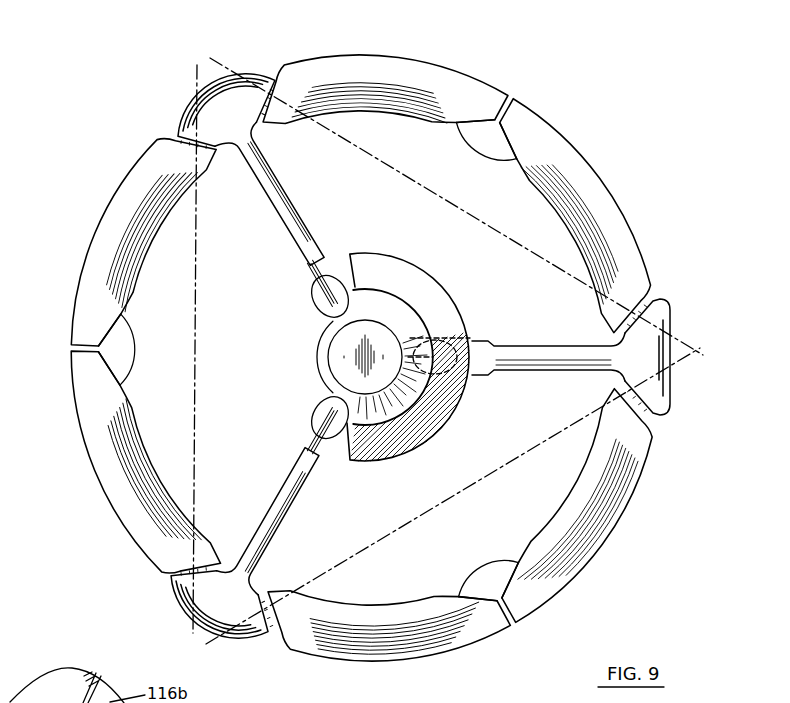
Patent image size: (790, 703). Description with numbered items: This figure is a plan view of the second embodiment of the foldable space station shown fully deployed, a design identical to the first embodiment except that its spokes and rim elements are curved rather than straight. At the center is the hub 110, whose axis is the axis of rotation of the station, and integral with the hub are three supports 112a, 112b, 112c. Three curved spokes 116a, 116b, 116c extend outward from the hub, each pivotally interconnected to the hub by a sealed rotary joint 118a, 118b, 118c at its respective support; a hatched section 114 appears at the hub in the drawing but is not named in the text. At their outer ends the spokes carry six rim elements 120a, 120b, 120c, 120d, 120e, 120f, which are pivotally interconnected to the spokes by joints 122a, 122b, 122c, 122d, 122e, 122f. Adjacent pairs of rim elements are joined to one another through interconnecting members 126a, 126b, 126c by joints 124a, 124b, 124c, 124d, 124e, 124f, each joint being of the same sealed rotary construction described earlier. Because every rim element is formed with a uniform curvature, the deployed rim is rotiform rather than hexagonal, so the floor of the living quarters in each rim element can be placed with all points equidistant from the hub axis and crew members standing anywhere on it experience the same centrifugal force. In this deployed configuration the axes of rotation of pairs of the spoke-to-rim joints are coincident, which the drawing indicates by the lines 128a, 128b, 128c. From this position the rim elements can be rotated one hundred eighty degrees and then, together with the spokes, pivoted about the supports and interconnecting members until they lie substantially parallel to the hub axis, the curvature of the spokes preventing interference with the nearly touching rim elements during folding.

The hub 110 is at (444, 274).
The support 112a is at (327, 402).
The support 112b is at (338, 263).
The support 112c is at (468, 383).
The hub body section 114 is at (368, 422).
The spoke 116a is at (277, 503).
The spoke 116b is at (290, 189).
The spoke 116c is at (523, 346).
The sealed rotary joint 118a is at (325, 433).
The sealed rotary joint 118b is at (318, 283).
The sealed rotary joint 118c is at (470, 336).
The rim element 120a is at (428, 640).
The rim element 120b is at (130, 508).
The rim element 120c is at (102, 225).
The rim element 120d is at (450, 77).
The rim element 120e is at (606, 213).
The rim element 120f is at (590, 553).
The joint 122a is at (265, 638).
The joint 122b is at (172, 570).
The joint 122c is at (182, 133).
The joint 122d is at (262, 105).
The joint 122e is at (645, 304).
The joint 122f is at (662, 412).
The joint 124a is at (520, 553).
The joint 124b is at (465, 583).
The joint 124c is at (123, 383).
The joint 124d is at (118, 320).
The joint 124e is at (474, 116).
The joint 124f is at (515, 140).
The interconnecting member 126a is at (483, 578).
The interconnecting member 126b is at (117, 358).
The interconnecting member 126c is at (494, 144).
The line 128a is at (548, 446).
The line 128b is at (197, 377).
The line 128c is at (470, 215).